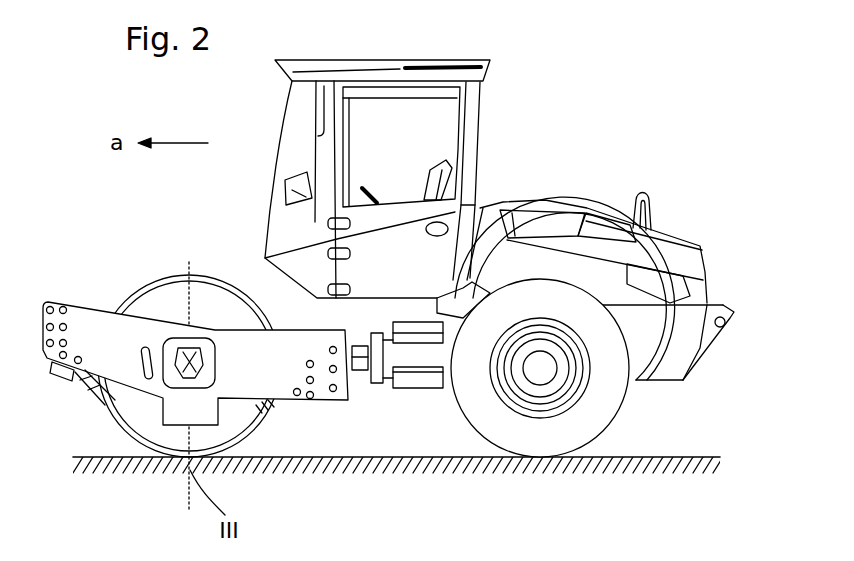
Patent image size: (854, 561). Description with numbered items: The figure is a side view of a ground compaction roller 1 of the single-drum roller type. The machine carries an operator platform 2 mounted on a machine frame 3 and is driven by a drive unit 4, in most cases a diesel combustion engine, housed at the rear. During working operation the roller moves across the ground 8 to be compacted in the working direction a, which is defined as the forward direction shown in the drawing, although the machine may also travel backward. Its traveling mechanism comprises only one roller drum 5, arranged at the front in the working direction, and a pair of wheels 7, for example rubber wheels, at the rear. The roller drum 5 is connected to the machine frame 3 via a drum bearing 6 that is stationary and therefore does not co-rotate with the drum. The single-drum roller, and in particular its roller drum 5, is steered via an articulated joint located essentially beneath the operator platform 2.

The ground compaction roller 1 is at (540, 148).
The operator platform 2 is at (408, 115).
The machine frame 3 is at (550, 217).
The drive unit 4 is at (607, 266).
The roller drum 5 is at (148, 427).
The drum bearing 6 is at (127, 333).
The wheels 7 is at (538, 430).
The ground 8 is at (298, 460).